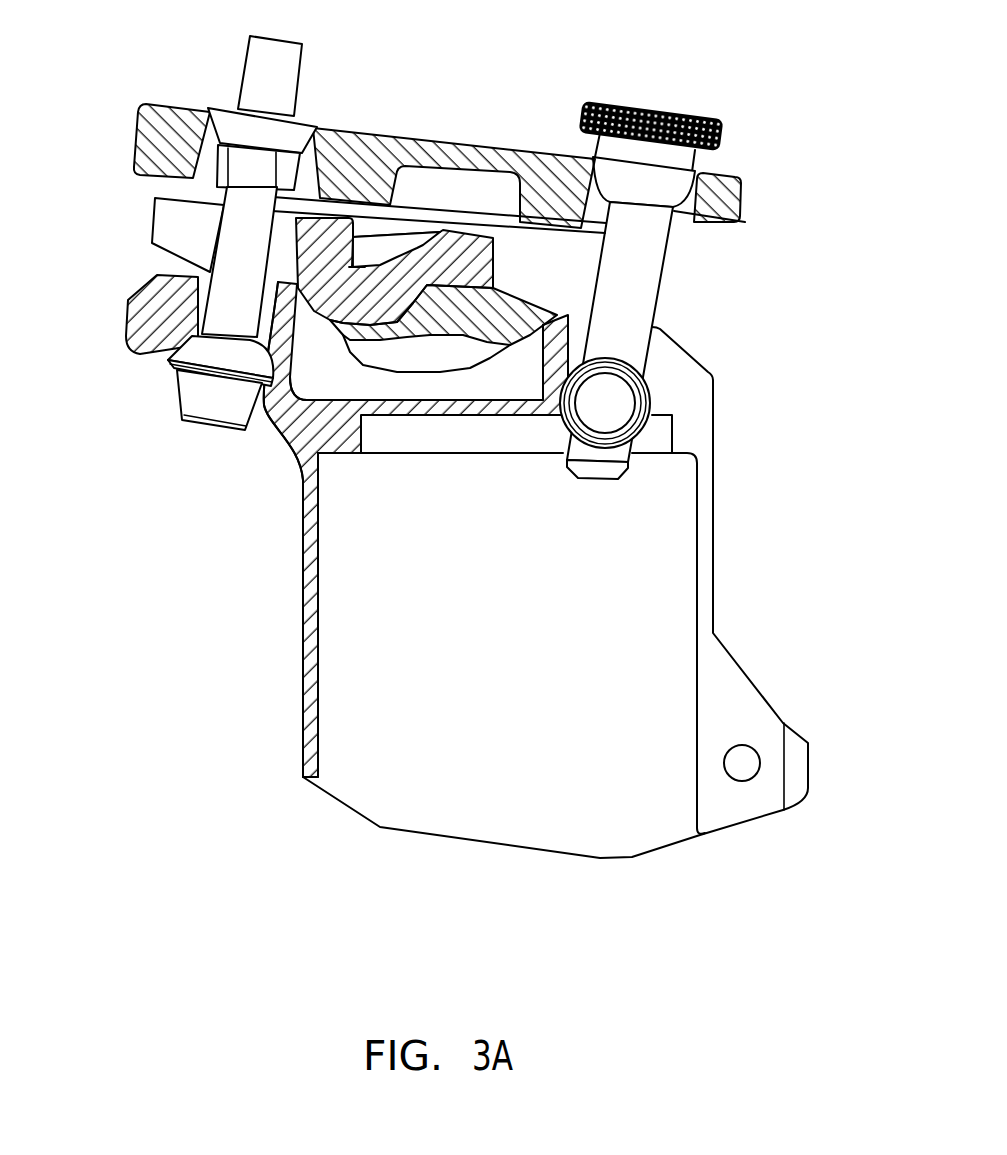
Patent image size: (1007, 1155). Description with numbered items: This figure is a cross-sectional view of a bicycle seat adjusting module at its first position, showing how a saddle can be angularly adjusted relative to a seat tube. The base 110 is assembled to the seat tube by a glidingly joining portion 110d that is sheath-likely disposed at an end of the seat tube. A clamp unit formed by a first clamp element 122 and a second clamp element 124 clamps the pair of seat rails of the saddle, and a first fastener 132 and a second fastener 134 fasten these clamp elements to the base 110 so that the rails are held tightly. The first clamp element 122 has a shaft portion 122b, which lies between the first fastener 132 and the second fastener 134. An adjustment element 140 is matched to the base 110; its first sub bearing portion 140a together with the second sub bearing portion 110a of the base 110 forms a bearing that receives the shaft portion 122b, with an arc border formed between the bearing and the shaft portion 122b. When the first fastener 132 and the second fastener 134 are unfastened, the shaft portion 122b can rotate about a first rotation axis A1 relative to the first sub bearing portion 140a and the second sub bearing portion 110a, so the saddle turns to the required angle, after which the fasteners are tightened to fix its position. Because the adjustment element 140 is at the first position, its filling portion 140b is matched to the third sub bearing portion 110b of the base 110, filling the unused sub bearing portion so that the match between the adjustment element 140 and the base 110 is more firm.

The base 110 is at (303, 445).
The second sub bearing portion 110a is at (274, 433).
The third sub bearing portion 110b is at (560, 348).
The glidingly joining portion 110d is at (307, 717).
The first clamp element 122 is at (173, 228).
The shaft portion 122b is at (337, 318).
The second clamp element 124 is at (150, 143).
The first fastener 132 is at (207, 402).
The second fastener 134 is at (647, 106).
The adjustment element 140 is at (515, 322).
The first sub bearing portion 140a is at (395, 328).
The filling portion 140b is at (438, 342).
The first rotation axis A1 is at (354, 260).